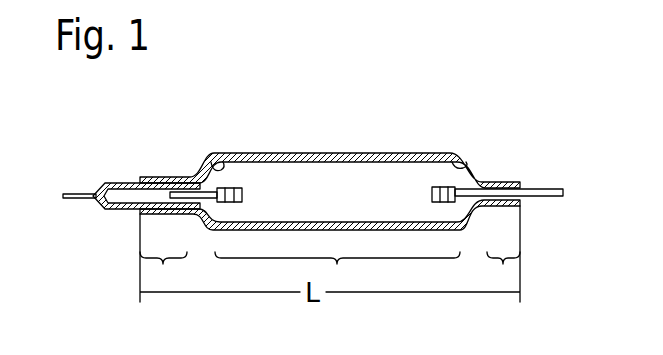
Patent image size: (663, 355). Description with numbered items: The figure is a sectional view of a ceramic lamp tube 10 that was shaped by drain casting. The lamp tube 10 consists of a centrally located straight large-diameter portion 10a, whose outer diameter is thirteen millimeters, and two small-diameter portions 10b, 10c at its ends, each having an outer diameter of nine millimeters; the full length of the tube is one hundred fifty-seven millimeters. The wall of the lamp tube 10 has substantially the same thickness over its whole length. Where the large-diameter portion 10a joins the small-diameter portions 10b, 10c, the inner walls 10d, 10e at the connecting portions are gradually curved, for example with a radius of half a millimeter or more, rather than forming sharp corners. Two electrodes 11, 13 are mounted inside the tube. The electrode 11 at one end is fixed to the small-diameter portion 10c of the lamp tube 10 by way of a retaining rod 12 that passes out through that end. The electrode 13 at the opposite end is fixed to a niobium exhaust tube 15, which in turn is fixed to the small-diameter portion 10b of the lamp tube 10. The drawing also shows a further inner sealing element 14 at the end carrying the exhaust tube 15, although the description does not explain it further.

The lamp tube 10 is at (307, 154).
The large-diameter portion 10a is at (337, 272).
The small-diameter portion 10b is at (163, 272).
The small-diameter portion 10c is at (501, 272).
The inner wall 10d is at (224, 161).
The inner wall 10e is at (450, 160).
The electrode 11 is at (432, 195).
The retaining rod 12 is at (538, 188).
The electrode 13 is at (242, 198).
The inner exhaust tube 14 is at (168, 193).
The niobium exhaust tube 15 is at (100, 186).